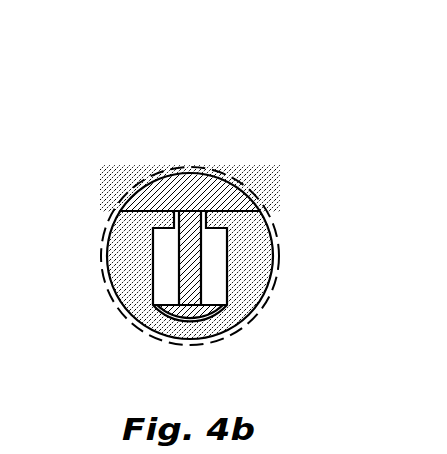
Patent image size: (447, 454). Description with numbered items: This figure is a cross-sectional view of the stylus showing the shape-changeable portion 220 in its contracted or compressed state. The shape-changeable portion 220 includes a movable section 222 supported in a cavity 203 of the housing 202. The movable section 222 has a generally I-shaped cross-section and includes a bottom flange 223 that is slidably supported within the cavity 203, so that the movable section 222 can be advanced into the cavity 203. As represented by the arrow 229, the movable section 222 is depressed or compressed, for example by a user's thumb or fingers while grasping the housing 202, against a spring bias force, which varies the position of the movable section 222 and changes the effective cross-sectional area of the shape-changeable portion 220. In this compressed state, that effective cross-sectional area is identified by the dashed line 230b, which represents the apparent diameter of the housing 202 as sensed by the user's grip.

The shape-changeable portion 220 is at (240, 149).
The dashed line 230b is at (113, 207).
The housing 202 is at (257, 240).
The cavity 203 is at (163, 272).
The movable section 222 is at (170, 197).
The bottom flange 223 is at (193, 310).
The arrow 229 is at (188, 148).